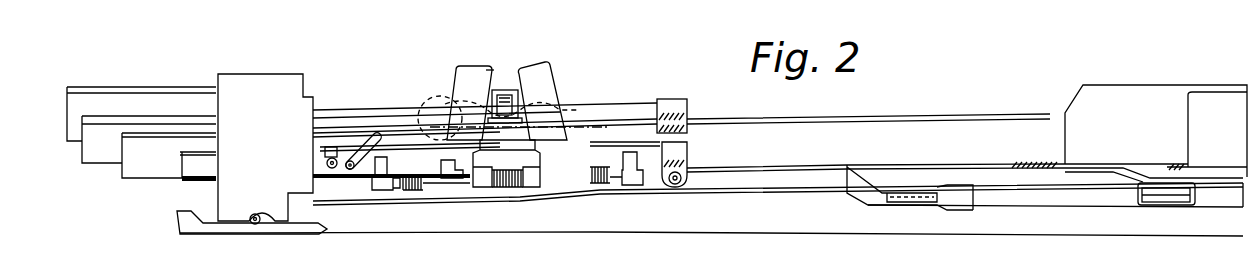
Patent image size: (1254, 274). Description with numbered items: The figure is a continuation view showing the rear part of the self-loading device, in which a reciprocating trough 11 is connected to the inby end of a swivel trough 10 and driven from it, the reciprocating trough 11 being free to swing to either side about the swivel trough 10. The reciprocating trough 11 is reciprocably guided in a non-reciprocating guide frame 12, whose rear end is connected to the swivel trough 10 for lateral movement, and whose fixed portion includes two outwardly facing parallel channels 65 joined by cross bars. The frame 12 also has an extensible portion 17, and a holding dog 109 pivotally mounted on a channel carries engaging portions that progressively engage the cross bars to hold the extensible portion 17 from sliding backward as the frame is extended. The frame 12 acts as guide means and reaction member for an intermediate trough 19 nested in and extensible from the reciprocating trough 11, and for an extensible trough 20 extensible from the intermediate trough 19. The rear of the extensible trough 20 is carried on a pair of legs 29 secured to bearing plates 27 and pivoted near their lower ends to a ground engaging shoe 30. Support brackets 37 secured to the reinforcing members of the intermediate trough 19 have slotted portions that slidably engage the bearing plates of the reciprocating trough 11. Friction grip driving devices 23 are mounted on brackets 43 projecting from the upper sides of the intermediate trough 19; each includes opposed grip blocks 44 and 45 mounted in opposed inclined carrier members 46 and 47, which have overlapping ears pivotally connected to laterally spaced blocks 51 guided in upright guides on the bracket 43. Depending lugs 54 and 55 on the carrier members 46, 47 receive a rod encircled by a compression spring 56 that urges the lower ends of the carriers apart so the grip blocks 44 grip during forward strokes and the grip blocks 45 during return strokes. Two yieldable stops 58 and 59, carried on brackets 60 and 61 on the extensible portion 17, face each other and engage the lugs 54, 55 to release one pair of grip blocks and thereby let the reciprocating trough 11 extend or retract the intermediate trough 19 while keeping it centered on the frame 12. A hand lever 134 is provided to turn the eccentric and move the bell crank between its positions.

The swivel trough 10 is at (1211, 82).
The reciprocating trough 11 is at (190, 131).
The guide frame 12 is at (828, 198).
The extensible portion of the frame 17 is at (180, 170).
The intermediate trough 19 is at (162, 116).
The extensible trough 20 is at (128, 101).
The friction grip driving device 23 is at (473, 63).
The bearing plate 27 is at (86, 87).
The leg 29 is at (315, 100).
The ground engaging shoe 30 is at (330, 230).
The support bracket 37 is at (677, 100).
The bracket 43 is at (502, 92).
The friction grip block 44 is at (440, 98).
The friction grip block 45 is at (580, 110).
The carrier member 46 is at (490, 70).
The carrier member 47 is at (552, 67).
The block 51 is at (506, 96).
The depending lug 54 is at (477, 190).
The depending lug 55 is at (540, 180).
The compression spring 56 is at (518, 192).
The yieldable stop 58 is at (416, 192).
The yieldable stop 59 is at (594, 188).
The bracket 60 is at (383, 190).
The bracket 61 is at (642, 187).
The channel 65 is at (750, 180).
The holding dog 109 is at (452, 195).
The hand lever 134 is at (368, 112).